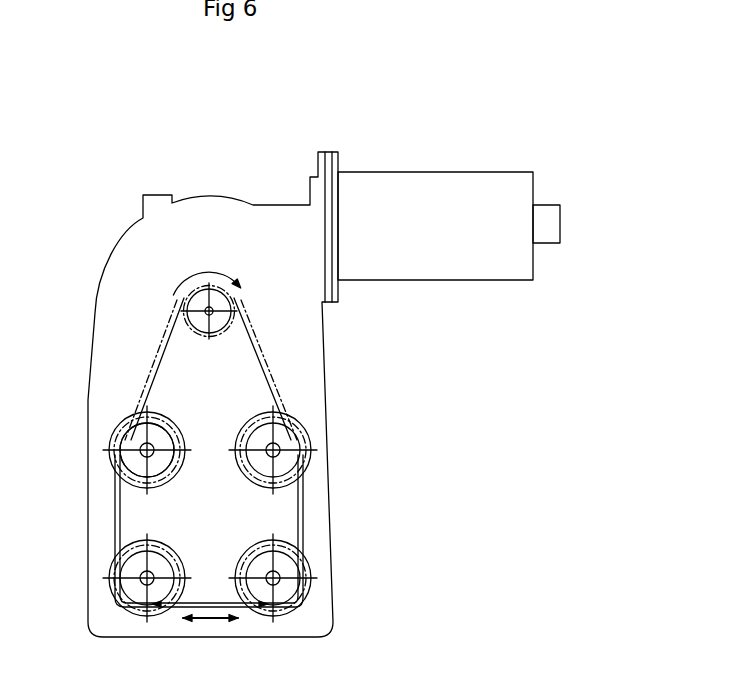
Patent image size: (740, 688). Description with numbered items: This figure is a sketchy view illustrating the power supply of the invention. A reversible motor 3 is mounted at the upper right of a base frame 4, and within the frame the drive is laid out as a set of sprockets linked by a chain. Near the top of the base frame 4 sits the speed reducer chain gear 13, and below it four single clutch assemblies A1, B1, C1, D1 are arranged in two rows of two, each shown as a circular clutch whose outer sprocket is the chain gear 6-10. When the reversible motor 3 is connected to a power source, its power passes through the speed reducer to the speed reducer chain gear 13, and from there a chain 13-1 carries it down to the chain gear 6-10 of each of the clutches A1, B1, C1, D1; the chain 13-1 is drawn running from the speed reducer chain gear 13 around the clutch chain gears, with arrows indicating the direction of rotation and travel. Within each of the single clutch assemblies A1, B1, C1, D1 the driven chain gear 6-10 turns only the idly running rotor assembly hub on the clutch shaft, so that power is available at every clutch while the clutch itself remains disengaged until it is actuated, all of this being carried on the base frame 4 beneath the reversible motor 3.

The reversible motor 3 is at (433, 178).
The base frame 4 is at (323, 526).
The speed reducer chain gear 13 is at (228, 305).
The chain 13-1 is at (265, 378).
The chain gear 6-10 is at (158, 437).
The single clutch assembly A1 is at (106, 462).
The single clutch assembly B1 is at (314, 458).
The single clutch assembly C1 is at (309, 597).
The single clutch assembly D1 is at (118, 606).